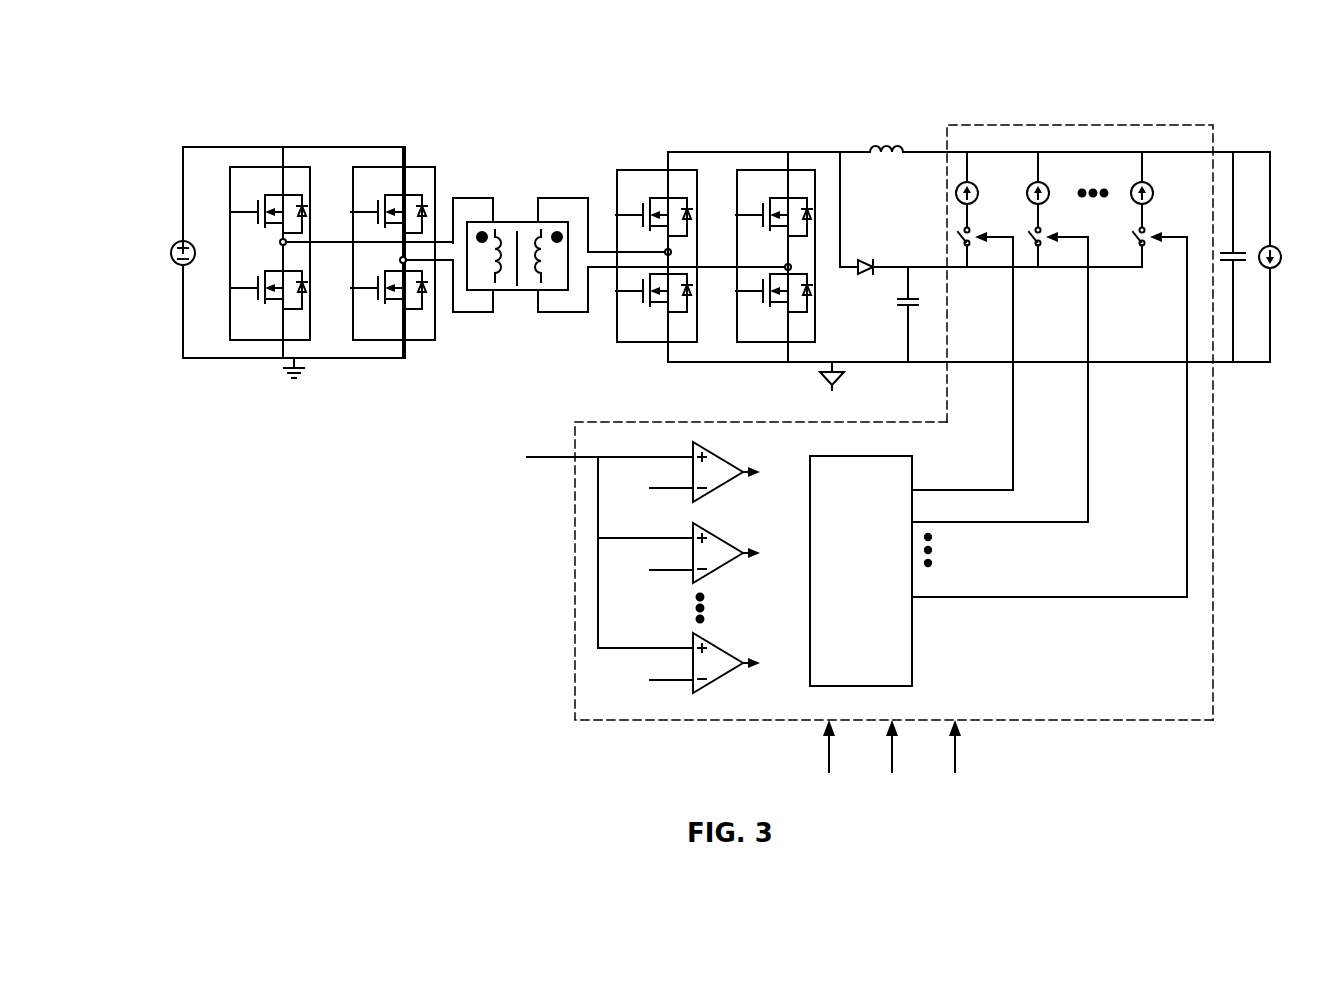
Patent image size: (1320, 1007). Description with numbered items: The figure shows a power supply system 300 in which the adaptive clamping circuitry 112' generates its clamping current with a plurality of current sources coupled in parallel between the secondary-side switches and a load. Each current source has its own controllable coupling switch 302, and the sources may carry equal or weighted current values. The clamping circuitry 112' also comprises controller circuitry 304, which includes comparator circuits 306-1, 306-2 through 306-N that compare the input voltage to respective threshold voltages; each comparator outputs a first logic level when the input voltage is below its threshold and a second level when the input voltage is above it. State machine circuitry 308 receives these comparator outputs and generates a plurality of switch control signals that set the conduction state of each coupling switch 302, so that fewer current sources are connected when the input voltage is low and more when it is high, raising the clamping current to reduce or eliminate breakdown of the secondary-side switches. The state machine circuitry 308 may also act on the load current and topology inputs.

The power supply system 300 is at (179, 63).
The adaptive clamping circuitry 112' is at (1075, 396).
The controllable coupling switch 302 is at (947, 216).
The controller circuitry 304 is at (679, 430).
The comparator circuit 306-1 is at (788, 461).
The comparator circuit 306-2 is at (788, 545).
The comparator circuit 306-N is at (790, 654).
The state machine circuitry 308 is at (846, 621).